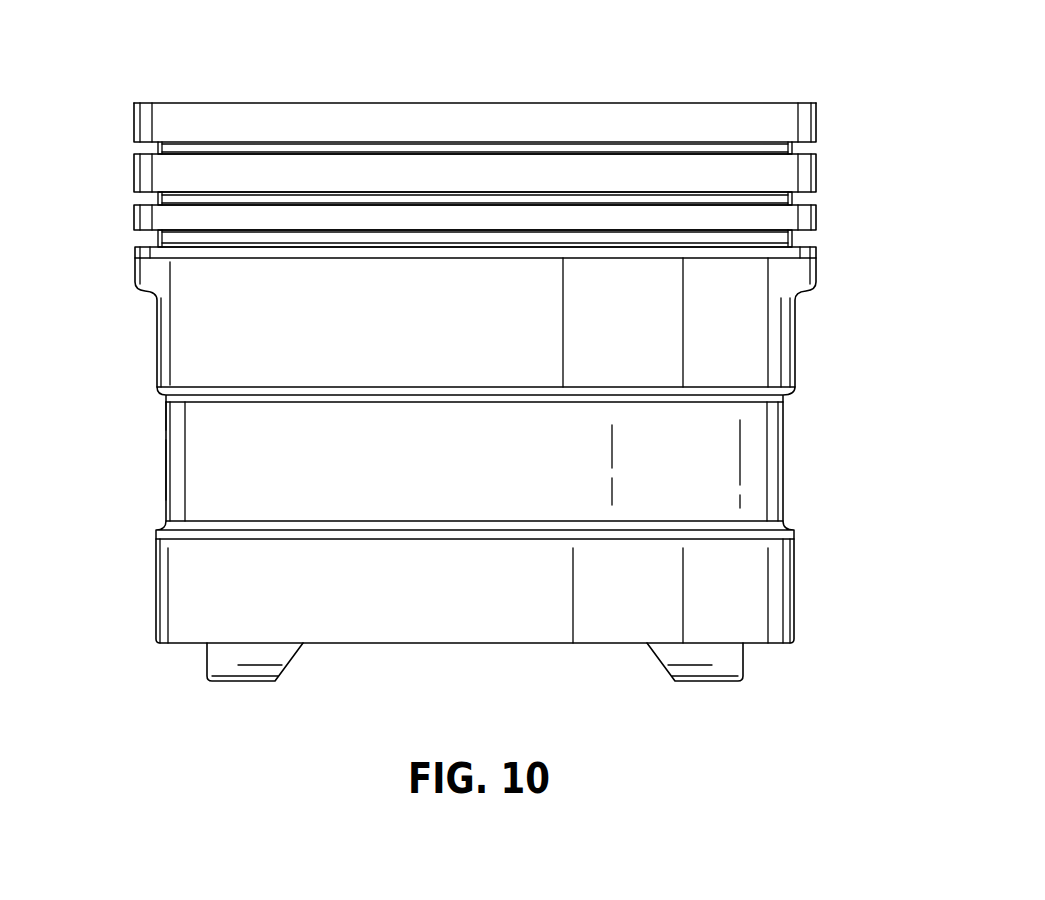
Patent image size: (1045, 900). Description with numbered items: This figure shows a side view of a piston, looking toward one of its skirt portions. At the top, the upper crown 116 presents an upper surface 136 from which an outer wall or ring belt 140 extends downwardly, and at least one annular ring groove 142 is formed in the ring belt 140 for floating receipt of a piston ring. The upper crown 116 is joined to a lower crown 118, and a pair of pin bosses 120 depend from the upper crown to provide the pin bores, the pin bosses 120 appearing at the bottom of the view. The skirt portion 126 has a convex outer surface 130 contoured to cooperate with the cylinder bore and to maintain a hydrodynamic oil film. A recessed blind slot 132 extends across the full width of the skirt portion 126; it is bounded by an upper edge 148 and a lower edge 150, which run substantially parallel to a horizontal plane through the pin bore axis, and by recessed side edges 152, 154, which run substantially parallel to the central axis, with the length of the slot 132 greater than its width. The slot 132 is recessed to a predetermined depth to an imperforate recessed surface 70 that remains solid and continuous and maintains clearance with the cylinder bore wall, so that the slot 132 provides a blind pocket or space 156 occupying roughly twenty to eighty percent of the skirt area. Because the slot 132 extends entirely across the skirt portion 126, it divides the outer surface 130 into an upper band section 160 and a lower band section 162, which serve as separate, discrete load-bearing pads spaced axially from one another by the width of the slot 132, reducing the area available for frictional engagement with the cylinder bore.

The upper surface 136 is at (625, 103).
The upper crown 116 is at (530, 79).
The ring belt 140 is at (490, 131).
The annular ring groove 142 is at (803, 197).
The lower crown 118 is at (816, 268).
The upper band section 160 is at (217, 319).
The convex outer surface 130 is at (775, 343).
The upper edge 148 is at (317, 394).
The recessed surface 70 is at (162, 426).
The side edge 152 is at (165, 450).
The space 156 is at (156, 477).
The recessed slot 132 is at (771, 439).
The side edge 154 is at (785, 480).
The lower edge 150 is at (572, 530).
The skirt portion 126 is at (205, 570).
The lower band section 162 is at (218, 602).
The pin boss 120 is at (254, 672).